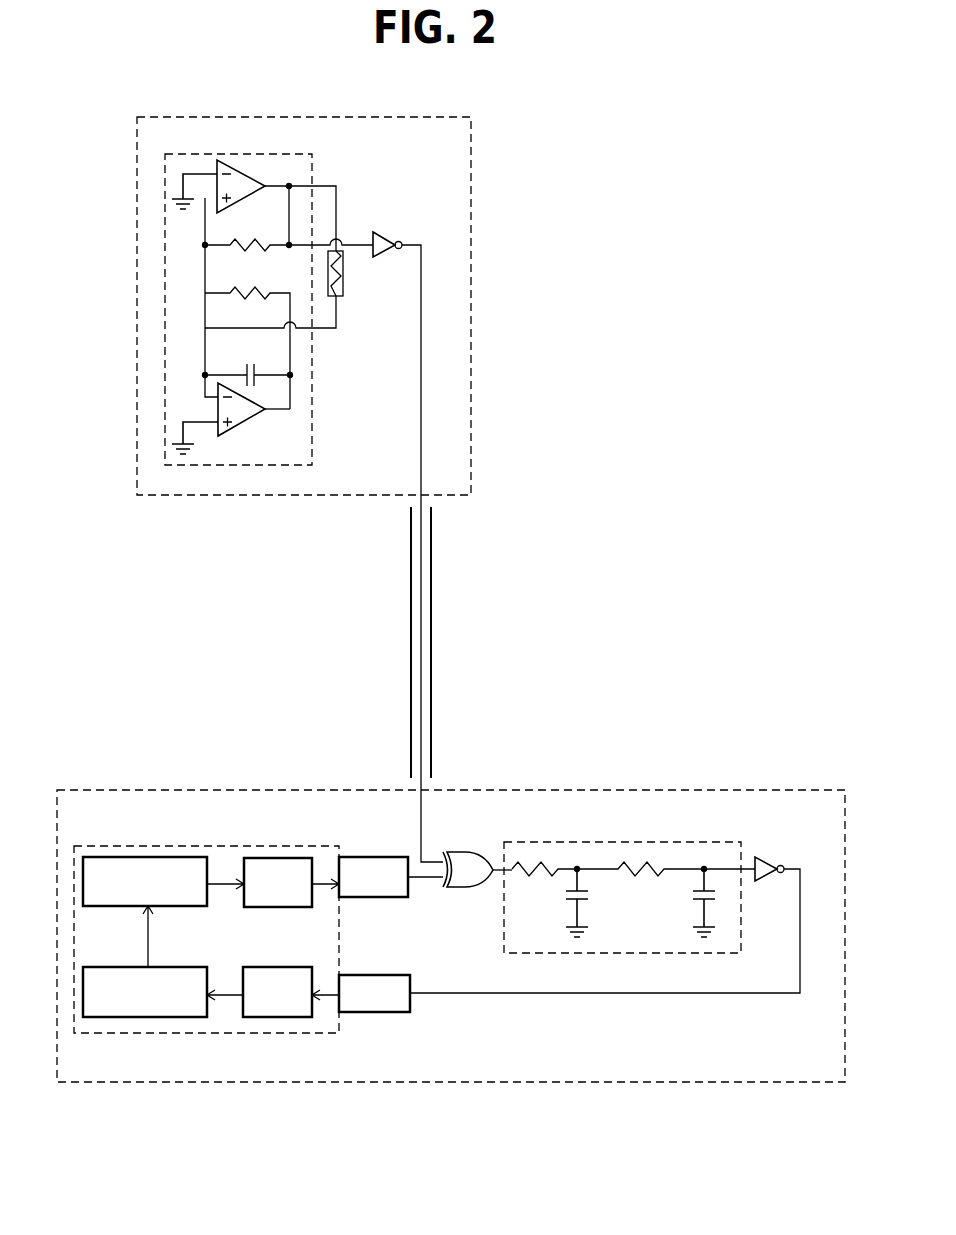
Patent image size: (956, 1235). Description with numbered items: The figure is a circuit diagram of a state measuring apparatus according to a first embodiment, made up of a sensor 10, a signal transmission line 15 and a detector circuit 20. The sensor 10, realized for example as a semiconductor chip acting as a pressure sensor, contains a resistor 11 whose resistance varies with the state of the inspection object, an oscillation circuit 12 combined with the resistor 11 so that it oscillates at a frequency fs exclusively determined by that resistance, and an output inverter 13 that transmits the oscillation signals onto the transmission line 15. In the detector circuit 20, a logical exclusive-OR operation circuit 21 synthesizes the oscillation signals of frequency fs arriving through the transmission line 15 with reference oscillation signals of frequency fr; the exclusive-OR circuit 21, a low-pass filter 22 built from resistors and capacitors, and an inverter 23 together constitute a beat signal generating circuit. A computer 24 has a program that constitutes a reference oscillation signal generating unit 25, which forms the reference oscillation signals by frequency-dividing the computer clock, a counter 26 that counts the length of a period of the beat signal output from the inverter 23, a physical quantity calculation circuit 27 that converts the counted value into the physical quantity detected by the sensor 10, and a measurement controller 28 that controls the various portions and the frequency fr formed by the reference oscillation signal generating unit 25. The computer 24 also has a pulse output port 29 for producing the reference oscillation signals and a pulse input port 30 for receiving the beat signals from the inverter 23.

The sensor 10 is at (137, 172).
The resistor 11 is at (344, 270).
The oscillation circuit 12 is at (185, 466).
The output inverter 13 is at (386, 233).
The signal transmission line 15 is at (431, 593).
The detector circuit 20 is at (165, 790).
The logical exclusive-OR operation circuit 21 is at (470, 852).
The low-pass filter 22 is at (694, 842).
The inverter 23 is at (768, 858).
The computer 24 is at (285, 846).
The reference oscillation signal generating unit 25 is at (263, 857).
The counter 26 is at (277, 1017).
The physical quantity calculation circuit 27 is at (148, 1017).
The measurement controller 28 is at (158, 857).
The pulse output port 29 is at (377, 857).
The pulse input port 30 is at (374, 1012).